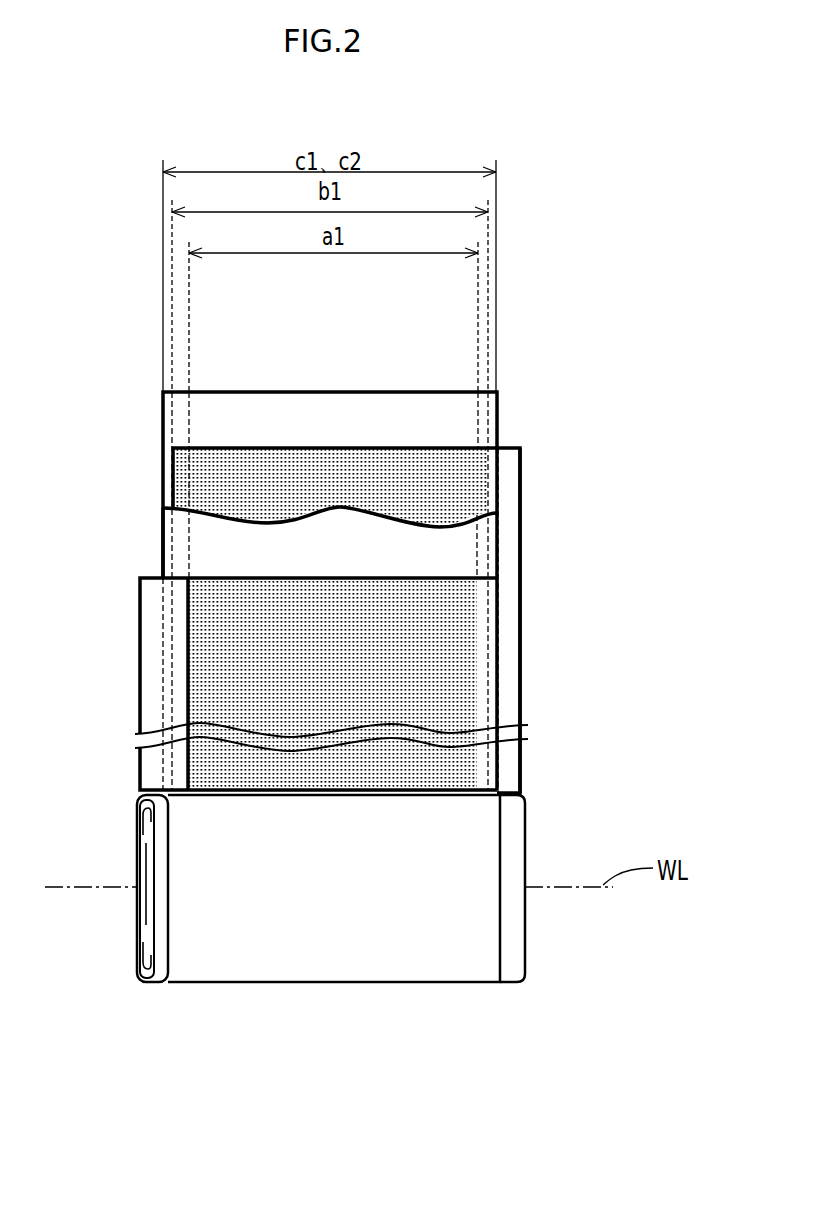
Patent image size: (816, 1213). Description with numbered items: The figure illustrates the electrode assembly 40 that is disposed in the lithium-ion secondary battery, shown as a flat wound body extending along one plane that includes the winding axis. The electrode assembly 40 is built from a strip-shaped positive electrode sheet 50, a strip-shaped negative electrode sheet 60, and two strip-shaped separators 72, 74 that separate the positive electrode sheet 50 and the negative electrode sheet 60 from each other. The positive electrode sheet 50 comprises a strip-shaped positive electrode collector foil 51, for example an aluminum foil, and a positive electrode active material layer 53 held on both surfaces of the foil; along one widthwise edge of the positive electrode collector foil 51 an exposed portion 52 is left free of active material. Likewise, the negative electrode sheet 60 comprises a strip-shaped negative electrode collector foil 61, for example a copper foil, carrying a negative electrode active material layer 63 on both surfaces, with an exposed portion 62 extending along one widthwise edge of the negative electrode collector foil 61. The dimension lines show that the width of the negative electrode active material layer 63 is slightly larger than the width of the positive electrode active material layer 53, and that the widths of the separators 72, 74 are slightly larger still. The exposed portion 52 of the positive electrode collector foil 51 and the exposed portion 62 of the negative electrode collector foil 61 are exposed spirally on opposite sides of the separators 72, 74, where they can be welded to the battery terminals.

The electrode assembly 40 is at (370, 967).
The positive electrode sheet 50 is at (127, 636).
The positive electrode collector foil 51 is at (318, 577).
The exposed portion 52 is at (157, 693).
The positive electrode active material layer 53 is at (208, 674).
The negative electrode sheet 60 is at (529, 451).
The negative electrode collector foil 61 is at (318, 446).
The exposed portion 62 is at (505, 498).
The negative electrode active material layer 63 is at (435, 462).
The separator 72 is at (181, 419).
The separator 74 is at (181, 553).